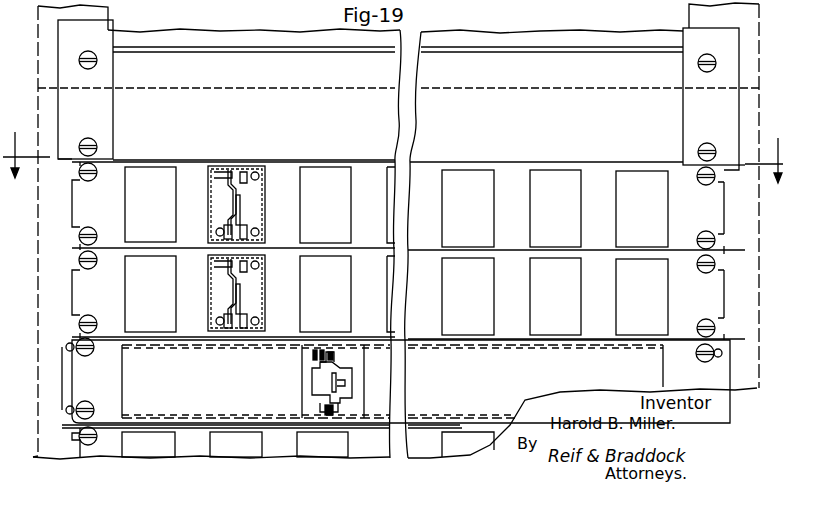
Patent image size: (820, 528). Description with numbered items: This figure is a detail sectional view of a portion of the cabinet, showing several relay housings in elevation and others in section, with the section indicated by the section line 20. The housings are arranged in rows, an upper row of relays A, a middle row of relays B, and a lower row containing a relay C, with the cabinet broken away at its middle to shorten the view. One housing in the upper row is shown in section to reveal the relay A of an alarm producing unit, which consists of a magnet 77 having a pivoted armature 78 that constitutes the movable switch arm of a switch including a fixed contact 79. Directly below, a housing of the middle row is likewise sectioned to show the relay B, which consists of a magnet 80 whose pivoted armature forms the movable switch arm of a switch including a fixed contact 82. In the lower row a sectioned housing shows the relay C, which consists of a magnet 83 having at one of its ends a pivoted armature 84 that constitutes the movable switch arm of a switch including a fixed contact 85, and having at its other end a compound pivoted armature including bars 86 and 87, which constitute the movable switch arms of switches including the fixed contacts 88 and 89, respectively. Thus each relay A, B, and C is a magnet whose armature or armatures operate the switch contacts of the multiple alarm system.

The section line 20- 20 is at (395, 167).
The magnet 77 is at (239, 204).
The pivoted armature 78 is at (232, 207).
The fixed contact 79 is at (230, 226).
The magnet 80 is at (250, 293).
The fixed contact 82 is at (240, 318).
The magnet 83 is at (348, 372).
The pivoted armature 84 is at (353, 393).
The fixed contact 85 is at (323, 408).
The bar 86 is at (337, 354).
The bar 87 is at (322, 360).
The fixed contact 88 is at (320, 363).
The fixed contact 89 is at (315, 354).
The relay A is at (213, 190).
The relay B is at (390, 298).
The relay C is at (396, 380).